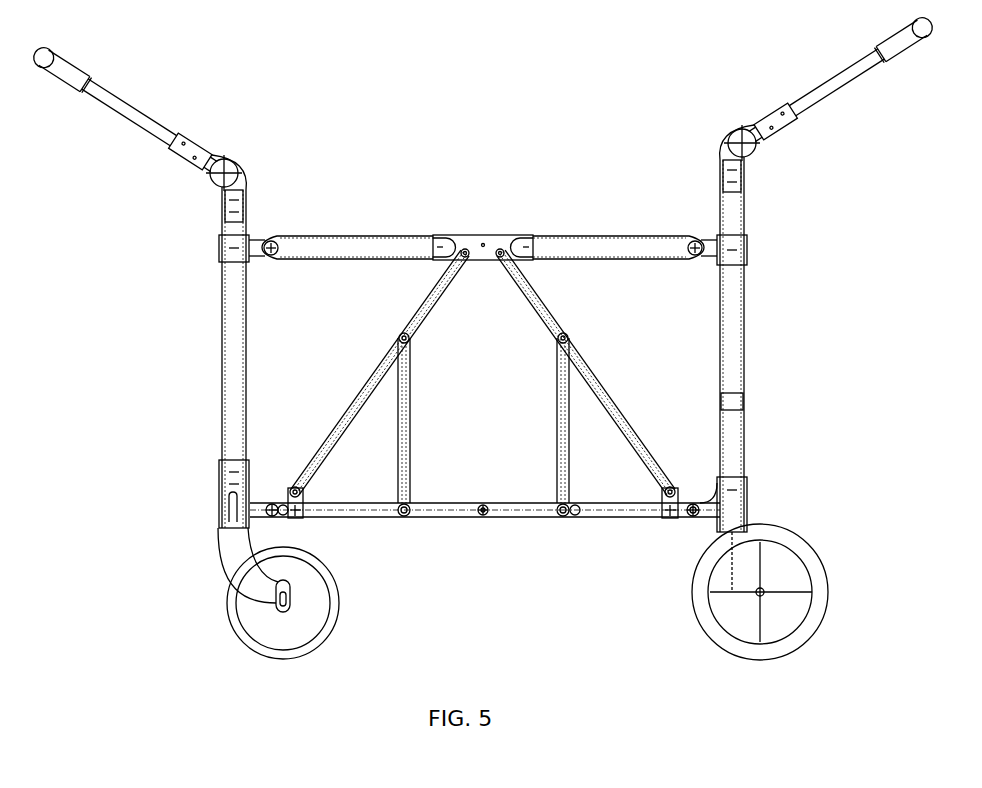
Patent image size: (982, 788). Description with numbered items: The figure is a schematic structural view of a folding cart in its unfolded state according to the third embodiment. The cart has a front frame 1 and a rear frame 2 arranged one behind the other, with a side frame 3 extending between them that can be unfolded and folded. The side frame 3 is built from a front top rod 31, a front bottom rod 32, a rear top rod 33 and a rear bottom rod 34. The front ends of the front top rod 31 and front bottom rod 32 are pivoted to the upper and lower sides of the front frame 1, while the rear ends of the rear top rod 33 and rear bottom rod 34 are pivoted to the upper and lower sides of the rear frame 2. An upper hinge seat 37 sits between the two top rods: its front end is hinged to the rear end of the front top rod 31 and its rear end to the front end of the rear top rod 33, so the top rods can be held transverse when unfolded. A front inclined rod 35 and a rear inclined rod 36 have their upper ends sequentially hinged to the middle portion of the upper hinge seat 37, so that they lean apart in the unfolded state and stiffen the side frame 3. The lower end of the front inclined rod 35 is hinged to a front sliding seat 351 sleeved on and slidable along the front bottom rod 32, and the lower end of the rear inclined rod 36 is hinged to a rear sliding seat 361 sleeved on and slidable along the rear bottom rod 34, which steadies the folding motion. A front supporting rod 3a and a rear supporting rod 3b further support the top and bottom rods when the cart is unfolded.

The front frame 1 is at (814, 337).
The rear frame 2 is at (184, 351).
The side frame 3 is at (483, 189).
The front top rod 31 is at (605, 250).
The front bottom rod 32 is at (618, 512).
The rear top rod 33 is at (380, 253).
The rear bottom rod 34 is at (430, 516).
The front inclined rod 35 is at (590, 375).
The rear inclined rod 36 is at (387, 372).
The upper hinge seat 37 is at (502, 250).
The front supporting rod 3a is at (558, 422).
The rear supporting rod 3b is at (409, 422).
The front sliding seat 351 is at (670, 518).
The rear sliding seat 361 is at (303, 514).